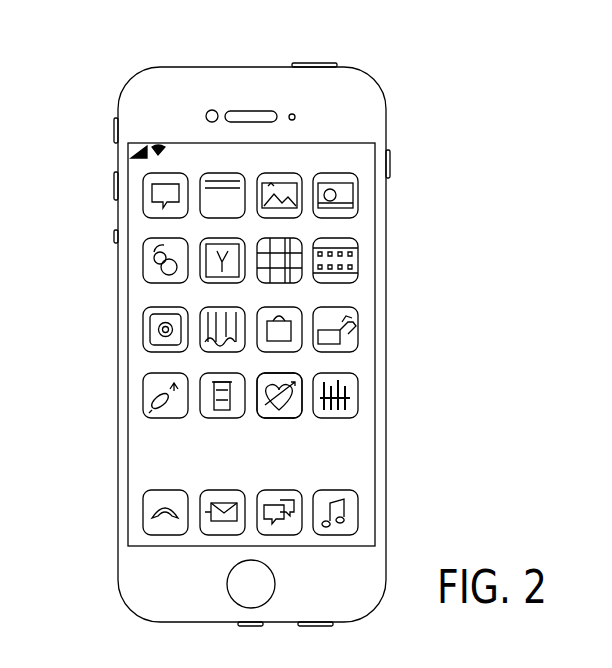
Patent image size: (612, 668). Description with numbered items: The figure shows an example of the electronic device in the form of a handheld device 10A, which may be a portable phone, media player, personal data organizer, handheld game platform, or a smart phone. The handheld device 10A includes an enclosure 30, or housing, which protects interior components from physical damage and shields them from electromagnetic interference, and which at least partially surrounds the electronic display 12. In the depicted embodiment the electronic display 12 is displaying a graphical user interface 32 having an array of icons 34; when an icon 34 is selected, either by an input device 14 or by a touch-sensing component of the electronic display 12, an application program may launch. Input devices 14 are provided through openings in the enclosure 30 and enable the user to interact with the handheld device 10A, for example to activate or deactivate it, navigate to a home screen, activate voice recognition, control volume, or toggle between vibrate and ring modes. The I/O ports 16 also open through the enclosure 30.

The handheld device 10A is at (108, 58).
The electronic display 12 is at (375, 445).
The input devices 14 is at (312, 63).
The I/O ports 16 is at (250, 623).
The enclosure 30 is at (386, 130).
The graphical user interface 32 is at (358, 231).
The icons 34 is at (275, 421).